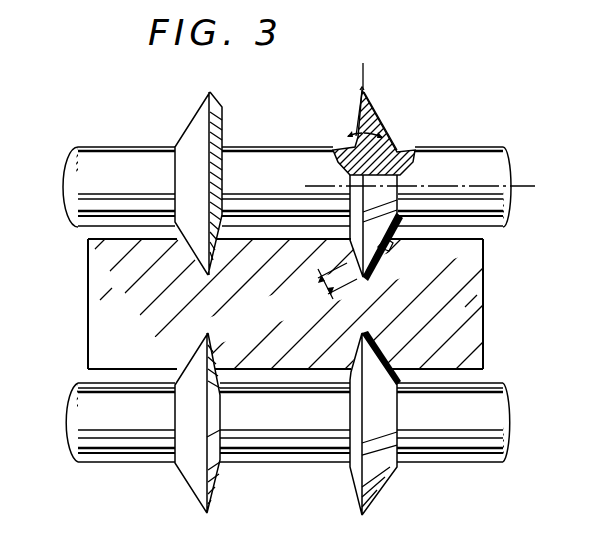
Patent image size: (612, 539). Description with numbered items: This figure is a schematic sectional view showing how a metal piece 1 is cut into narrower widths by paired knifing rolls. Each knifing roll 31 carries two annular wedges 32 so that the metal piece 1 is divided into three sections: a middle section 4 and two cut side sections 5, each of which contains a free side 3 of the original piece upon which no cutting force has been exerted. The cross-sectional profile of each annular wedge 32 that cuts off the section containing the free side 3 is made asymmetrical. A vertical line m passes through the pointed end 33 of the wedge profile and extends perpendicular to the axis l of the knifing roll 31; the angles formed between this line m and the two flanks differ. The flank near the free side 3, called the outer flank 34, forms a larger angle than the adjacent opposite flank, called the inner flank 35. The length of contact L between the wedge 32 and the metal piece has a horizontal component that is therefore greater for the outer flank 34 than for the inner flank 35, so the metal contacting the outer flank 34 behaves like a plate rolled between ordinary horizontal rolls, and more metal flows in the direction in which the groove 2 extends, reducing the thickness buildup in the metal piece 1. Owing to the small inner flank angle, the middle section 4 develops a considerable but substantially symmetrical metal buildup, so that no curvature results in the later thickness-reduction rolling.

The metal piece 1 is at (483, 337).
The groove 2 is at (385, 256).
The free side 3 is at (88, 272).
The middle section 4 is at (273, 319).
The cut side section 5 is at (100, 300).
The knifing roll 31 is at (466, 140).
The annular wedge 32 is at (193, 142).
The pointed end 33 is at (367, 87).
The outer flank 34 is at (398, 142).
The inner flank 35 is at (357, 105).
The vertical line m is at (367, 71).
The axis of the knifing roll l is at (524, 186).
The length of contact L is at (330, 290).